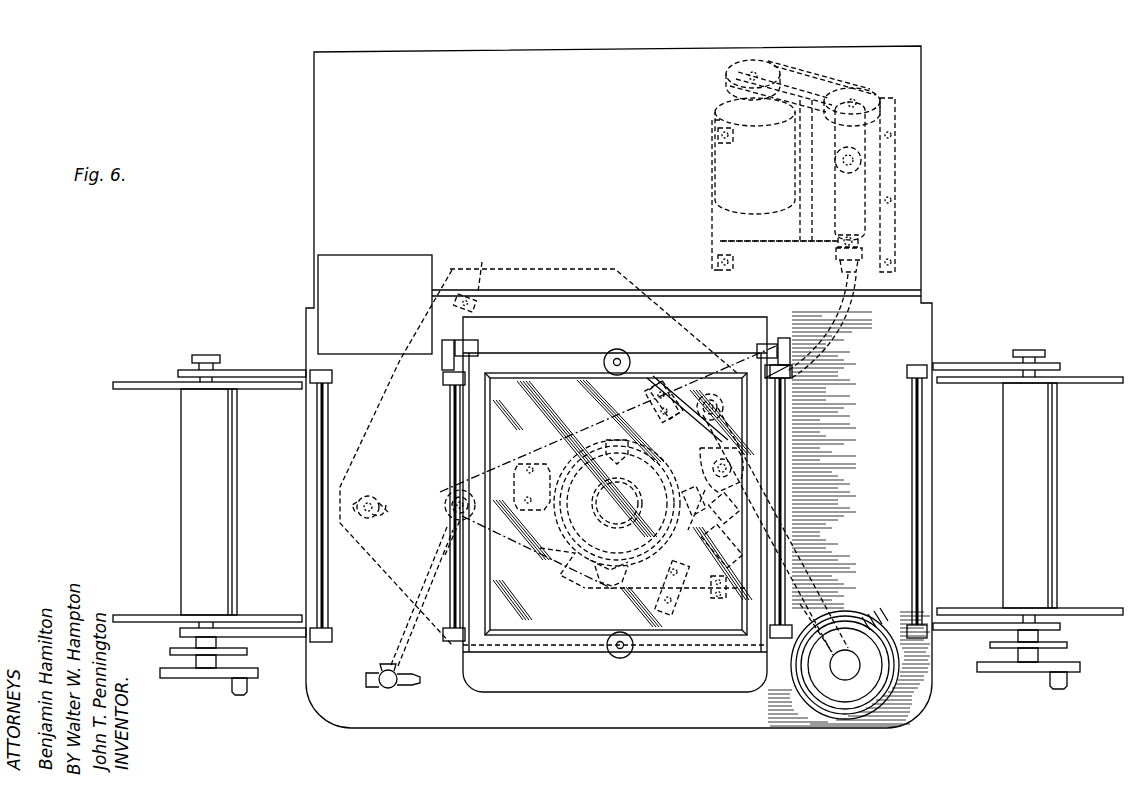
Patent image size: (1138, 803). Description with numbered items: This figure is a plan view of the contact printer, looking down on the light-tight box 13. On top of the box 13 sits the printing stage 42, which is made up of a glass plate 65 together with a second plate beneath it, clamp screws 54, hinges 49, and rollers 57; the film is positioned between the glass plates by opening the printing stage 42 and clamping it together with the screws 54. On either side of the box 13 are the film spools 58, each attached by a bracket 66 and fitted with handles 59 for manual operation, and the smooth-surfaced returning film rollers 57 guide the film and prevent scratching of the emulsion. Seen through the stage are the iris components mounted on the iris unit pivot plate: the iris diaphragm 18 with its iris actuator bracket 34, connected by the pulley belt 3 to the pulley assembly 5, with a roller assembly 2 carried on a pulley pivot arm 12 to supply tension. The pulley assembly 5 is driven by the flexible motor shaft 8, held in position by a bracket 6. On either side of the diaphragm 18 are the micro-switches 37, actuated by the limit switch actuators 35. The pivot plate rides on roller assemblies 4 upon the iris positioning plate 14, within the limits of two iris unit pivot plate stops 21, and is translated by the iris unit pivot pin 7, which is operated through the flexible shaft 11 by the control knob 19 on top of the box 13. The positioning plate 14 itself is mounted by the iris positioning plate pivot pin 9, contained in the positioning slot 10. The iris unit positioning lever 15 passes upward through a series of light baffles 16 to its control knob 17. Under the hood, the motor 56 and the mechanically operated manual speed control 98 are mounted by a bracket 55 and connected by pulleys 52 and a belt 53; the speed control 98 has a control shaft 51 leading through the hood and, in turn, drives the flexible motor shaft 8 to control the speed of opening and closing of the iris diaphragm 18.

The roller assembly 2 is at (715, 489).
The pulley belt 3 is at (700, 446).
The roller assemblies 4 is at (652, 380).
The pulley assembly 5 is at (712, 392).
The bracket 6 is at (668, 420).
The iris unit pivot pin 7 is at (448, 498).
The flexible motor shaft 8 is at (836, 331).
The iris positioning plate pivot pin 9 is at (368, 496).
The positioning slot 10 is at (388, 518).
The flexible shaft 11 is at (442, 556).
The pulley pivot arm 12 is at (703, 506).
The light-tight box 13 is at (312, 237).
The iris positioning plate 14 is at (388, 400).
The iris unit positioning lever 15 is at (810, 596).
The light baffles 16 is at (866, 616).
The control knob 17 is at (845, 680).
The iris diaphragm 18 is at (574, 570).
The control knob 19 is at (384, 670).
The iris unit pivot plate stops 21 is at (722, 606).
The iris actuator bracket 34 is at (616, 442).
The limit switch actuators 35 is at (608, 588).
The micro-switches 37 is at (530, 464).
The printing stage 42 is at (560, 656).
The hinges 49 is at (444, 348).
The control shaft 51 is at (866, 162).
The pulleys 52 is at (732, 68).
The belt 53 is at (800, 86).
The clamp screws 54 is at (624, 338).
The bracket 55 is at (774, 236).
The motor 56 is at (738, 176).
The film rollers 57 is at (322, 600).
The film spools 58 is at (618, 499).
The handles 59 is at (250, 687).
The glass plate 65 is at (538, 386).
The bracket 66 is at (288, 372).
The manual speed control 98 is at (860, 198).